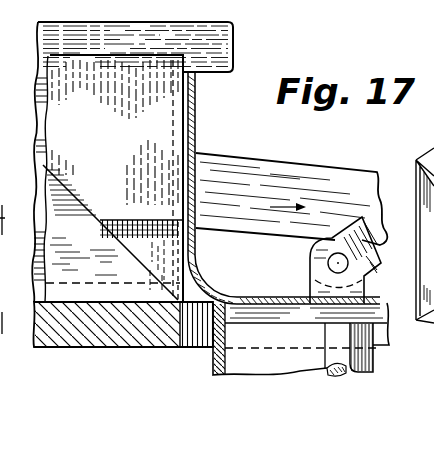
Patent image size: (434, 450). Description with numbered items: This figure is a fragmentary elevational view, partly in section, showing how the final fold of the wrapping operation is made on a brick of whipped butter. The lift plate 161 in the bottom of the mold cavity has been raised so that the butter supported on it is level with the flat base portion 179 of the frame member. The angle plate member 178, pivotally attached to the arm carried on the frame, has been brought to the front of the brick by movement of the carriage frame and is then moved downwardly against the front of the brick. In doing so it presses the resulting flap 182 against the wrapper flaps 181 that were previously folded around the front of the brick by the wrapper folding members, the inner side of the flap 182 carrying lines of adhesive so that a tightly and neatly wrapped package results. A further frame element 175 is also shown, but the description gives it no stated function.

The top frame member 175 is at (223, 47).
The wrapper flaps 181 is at (184, 100).
The flap 182 is at (188, 137).
The angle plate member 178 is at (204, 279).
The flat base portion 179 is at (140, 348).
The lift plate 161 is at (307, 318).